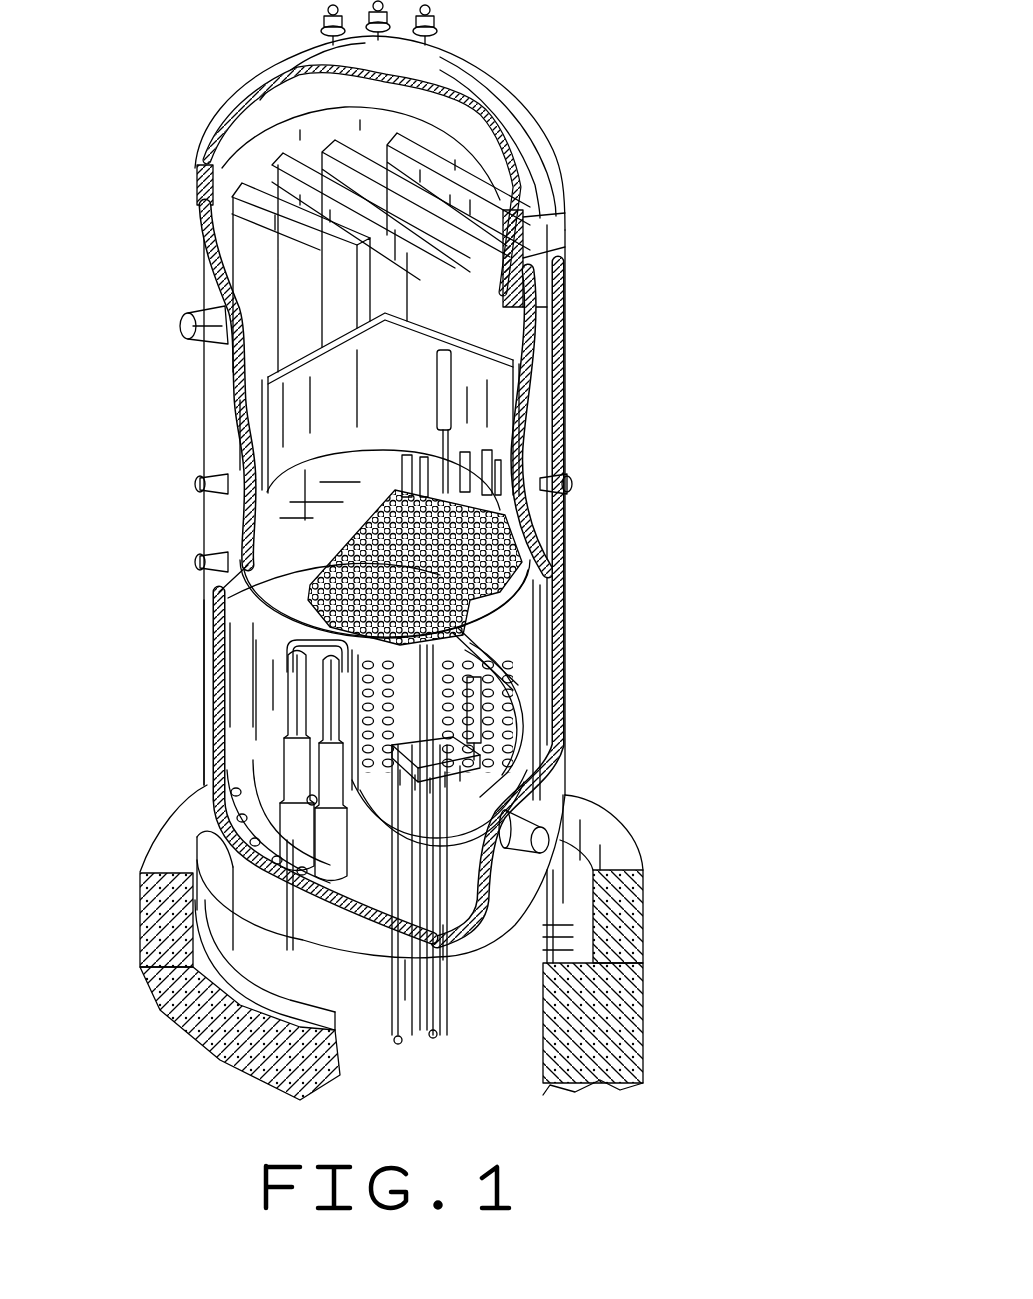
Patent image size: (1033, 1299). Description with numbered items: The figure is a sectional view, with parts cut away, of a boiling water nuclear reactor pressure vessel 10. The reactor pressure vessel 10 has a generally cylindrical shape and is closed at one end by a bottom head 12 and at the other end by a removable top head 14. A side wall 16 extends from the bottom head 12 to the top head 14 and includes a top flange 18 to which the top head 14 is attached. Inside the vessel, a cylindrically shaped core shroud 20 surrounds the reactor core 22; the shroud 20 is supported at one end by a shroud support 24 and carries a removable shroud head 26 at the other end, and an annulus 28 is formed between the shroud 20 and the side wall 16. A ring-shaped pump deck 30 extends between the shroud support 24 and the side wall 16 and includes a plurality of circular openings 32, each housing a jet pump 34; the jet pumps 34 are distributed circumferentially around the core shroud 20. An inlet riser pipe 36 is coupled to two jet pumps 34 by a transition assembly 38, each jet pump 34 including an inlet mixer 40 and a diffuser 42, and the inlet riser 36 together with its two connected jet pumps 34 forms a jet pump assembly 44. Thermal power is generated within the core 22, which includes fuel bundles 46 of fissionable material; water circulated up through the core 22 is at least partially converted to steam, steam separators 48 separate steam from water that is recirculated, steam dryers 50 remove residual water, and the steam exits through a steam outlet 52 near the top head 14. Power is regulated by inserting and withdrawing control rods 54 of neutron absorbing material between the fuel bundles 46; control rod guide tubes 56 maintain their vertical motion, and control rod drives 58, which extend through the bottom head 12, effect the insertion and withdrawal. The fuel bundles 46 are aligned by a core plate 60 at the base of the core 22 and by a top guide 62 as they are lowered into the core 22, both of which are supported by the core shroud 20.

The reactor pressure vessel 10 is at (603, 80).
The bottom head 12 is at (478, 940).
The top head 14 is at (485, 60).
The side wall 16 is at (210, 763).
The top flange 18 is at (523, 257).
The core shroud 20 is at (250, 623).
The reactor core 22 is at (500, 623).
The shroud support 24 is at (222, 787).
The shroud head 26 is at (338, 452).
The annulus 28 is at (213, 690).
The pump deck 30 is at (216, 810).
The circular openings 32 is at (210, 830).
The jet pump 34 is at (292, 717).
The inlet riser pipe 36 is at (313, 744).
The transition assembly 38 is at (257, 641).
The inlet mixer 40 is at (293, 683).
The diffuser 42 is at (298, 905).
The jet pump assembly 44 is at (380, 915).
The fuel bundles 46 is at (500, 677).
The steam separators 48 is at (455, 373).
The steam dryers 50 is at (390, 285).
The steam outlet 52 is at (180, 328).
The control rods 54 is at (500, 653).
The control rod guide tubes 56 is at (500, 822).
The control rod drives 58 is at (440, 993).
The core plate 60 is at (535, 714).
The top guide 62 is at (492, 600).